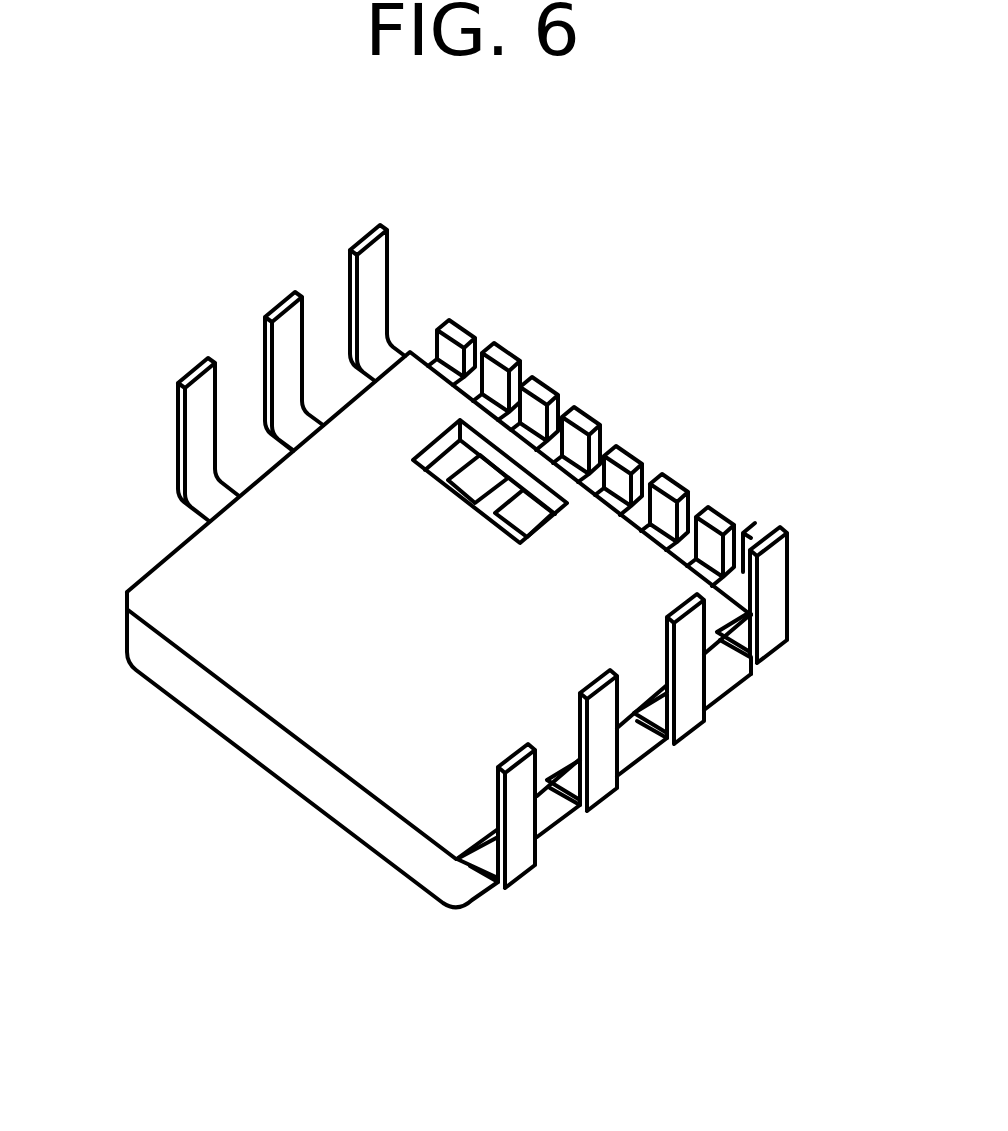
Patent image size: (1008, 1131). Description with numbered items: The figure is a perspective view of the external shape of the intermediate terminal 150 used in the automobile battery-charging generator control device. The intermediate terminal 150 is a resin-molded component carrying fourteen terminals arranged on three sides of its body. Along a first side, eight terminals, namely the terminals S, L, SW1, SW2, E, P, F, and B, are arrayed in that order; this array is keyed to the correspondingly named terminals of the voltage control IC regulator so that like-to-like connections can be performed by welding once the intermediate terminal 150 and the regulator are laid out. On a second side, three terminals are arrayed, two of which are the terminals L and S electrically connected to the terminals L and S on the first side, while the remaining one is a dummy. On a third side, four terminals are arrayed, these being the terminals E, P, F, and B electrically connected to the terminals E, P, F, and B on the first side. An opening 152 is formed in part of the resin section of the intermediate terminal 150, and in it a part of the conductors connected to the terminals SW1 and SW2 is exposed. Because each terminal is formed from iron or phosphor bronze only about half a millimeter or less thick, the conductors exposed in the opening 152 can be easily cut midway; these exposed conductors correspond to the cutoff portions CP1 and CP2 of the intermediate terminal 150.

The intermediate terminal 150 is at (232, 792).
The opening 152 is at (412, 462).
The cutoff portion CP1 is at (447, 482).
The cutoff portion CP2 is at (505, 513).
The terminal S is at (288, 302).
The terminal L is at (372, 232).
The terminal SW1 is at (575, 409).
The terminal SW2 is at (533, 377).
The terminal E is at (624, 446).
The terminal P is at (665, 480).
The terminal F is at (710, 512).
The terminal B is at (762, 528).